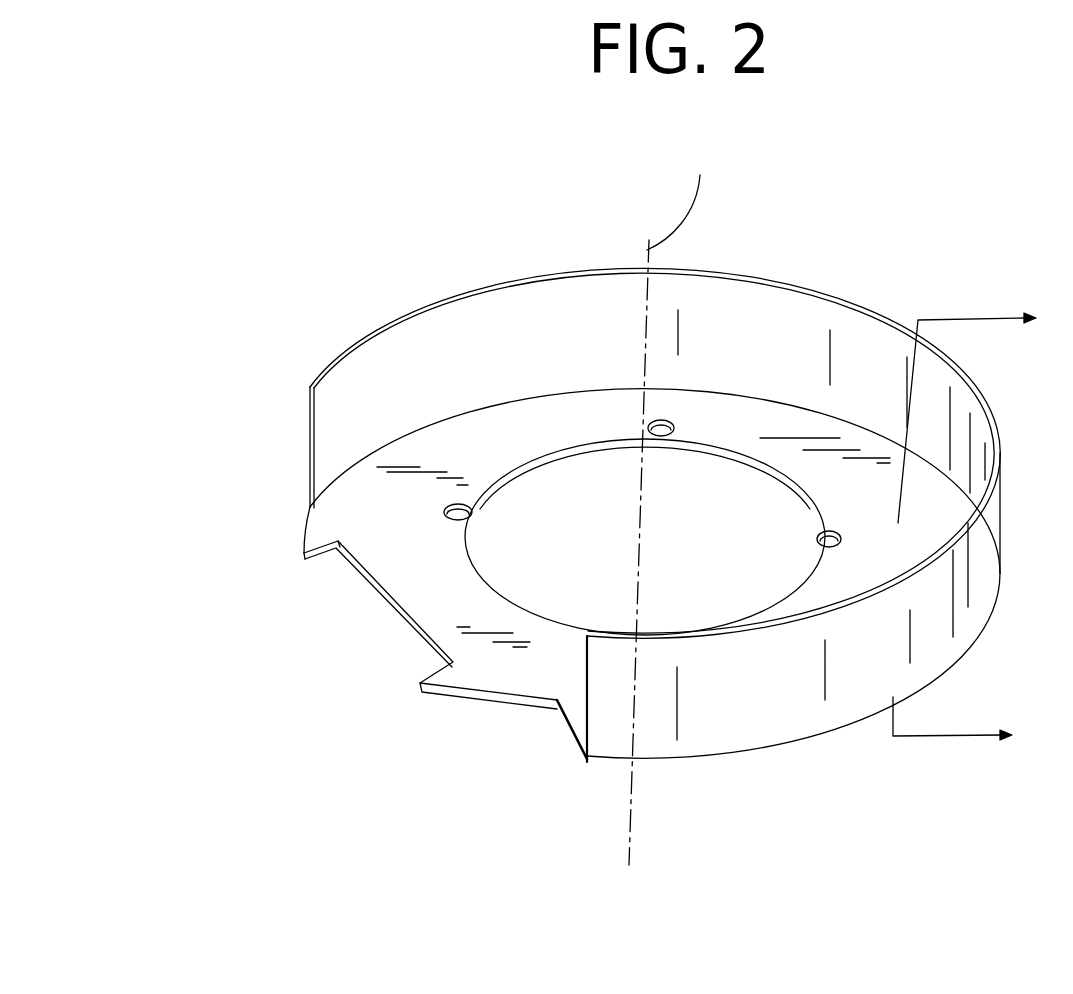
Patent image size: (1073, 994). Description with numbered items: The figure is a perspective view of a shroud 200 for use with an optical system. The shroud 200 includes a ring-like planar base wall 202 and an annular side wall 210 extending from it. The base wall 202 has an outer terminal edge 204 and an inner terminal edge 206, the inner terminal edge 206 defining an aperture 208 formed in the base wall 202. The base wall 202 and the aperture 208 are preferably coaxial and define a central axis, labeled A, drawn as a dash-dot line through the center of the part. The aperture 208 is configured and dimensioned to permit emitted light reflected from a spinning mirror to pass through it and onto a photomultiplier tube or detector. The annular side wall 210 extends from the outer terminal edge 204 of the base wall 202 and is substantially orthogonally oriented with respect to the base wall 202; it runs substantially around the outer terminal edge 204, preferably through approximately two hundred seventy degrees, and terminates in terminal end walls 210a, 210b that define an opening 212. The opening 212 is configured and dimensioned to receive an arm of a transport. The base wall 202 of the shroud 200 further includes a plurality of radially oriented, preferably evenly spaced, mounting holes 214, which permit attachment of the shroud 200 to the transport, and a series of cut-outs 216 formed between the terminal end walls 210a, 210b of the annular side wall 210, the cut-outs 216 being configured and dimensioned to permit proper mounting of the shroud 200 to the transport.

The shroud 200 is at (312, 213).
The base wall 202 is at (352, 513).
The outer terminal edge 204 is at (347, 465).
The inner terminal edge 206 is at (452, 574).
The aperture 208 is at (720, 527).
The annular side wall 210 is at (430, 337).
The terminal end wall 210a is at (307, 413).
The terminal end wall 210b is at (590, 719).
The opening 212 is at (527, 672).
The mounting holes 214 is at (673, 420).
The cut-outs 216 is at (420, 640).